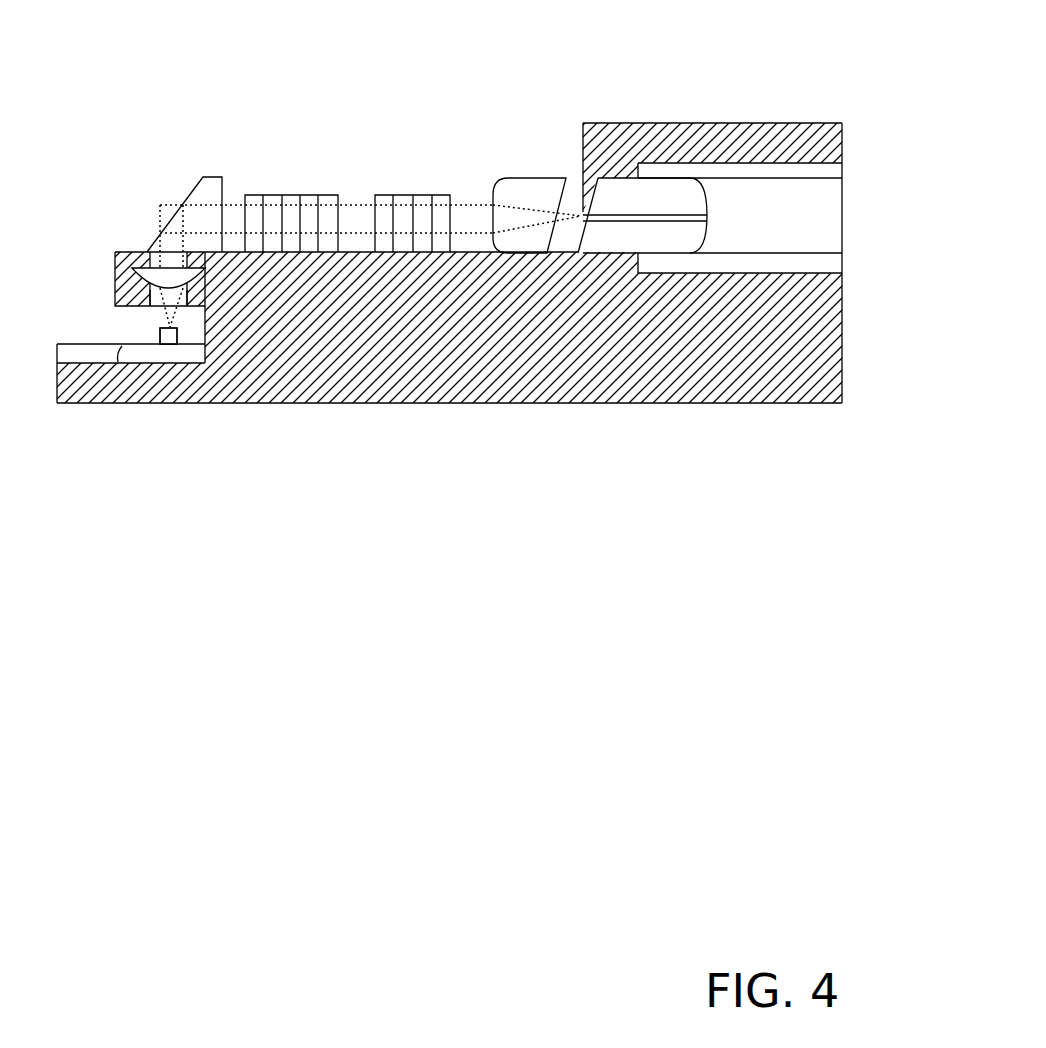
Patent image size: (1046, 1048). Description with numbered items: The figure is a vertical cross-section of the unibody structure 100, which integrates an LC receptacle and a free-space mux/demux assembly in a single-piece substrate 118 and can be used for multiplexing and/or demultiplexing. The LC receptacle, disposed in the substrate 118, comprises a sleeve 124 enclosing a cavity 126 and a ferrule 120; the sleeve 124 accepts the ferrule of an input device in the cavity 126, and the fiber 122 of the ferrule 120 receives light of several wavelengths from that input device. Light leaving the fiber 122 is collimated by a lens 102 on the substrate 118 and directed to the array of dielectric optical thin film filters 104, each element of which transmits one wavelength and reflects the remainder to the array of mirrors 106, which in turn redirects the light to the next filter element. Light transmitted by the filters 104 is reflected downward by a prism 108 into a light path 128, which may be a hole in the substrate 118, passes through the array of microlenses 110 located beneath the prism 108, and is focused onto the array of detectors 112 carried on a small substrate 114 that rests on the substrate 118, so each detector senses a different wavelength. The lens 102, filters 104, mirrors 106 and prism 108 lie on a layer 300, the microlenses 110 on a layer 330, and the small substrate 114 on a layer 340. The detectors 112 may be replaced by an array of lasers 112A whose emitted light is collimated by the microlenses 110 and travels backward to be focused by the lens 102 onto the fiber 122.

The unibody structure 100 is at (174, 46).
The lens 102 is at (520, 178).
The array of dielectric optical thin film filters 104 is at (293, 195).
The array of mirrors 106 is at (405, 195).
The prism 108 is at (217, 177).
The array of microlenses 110 is at (150, 273).
The array of detectors 112 is at (121, 321).
The array of lasers 112A is at (160, 332).
The small substrate 114 is at (90, 403).
The single-piece substrate 118 is at (432, 359).
The ferrule 120 is at (598, 176).
The fiber 122 is at (613, 227).
The sleeve 124 is at (737, 150).
The cavity 126 is at (786, 226).
The light path 128 is at (183, 300).
The layer 300 is at (120, 251).
The layer 330 is at (133, 280).
The layer 340 is at (173, 367).